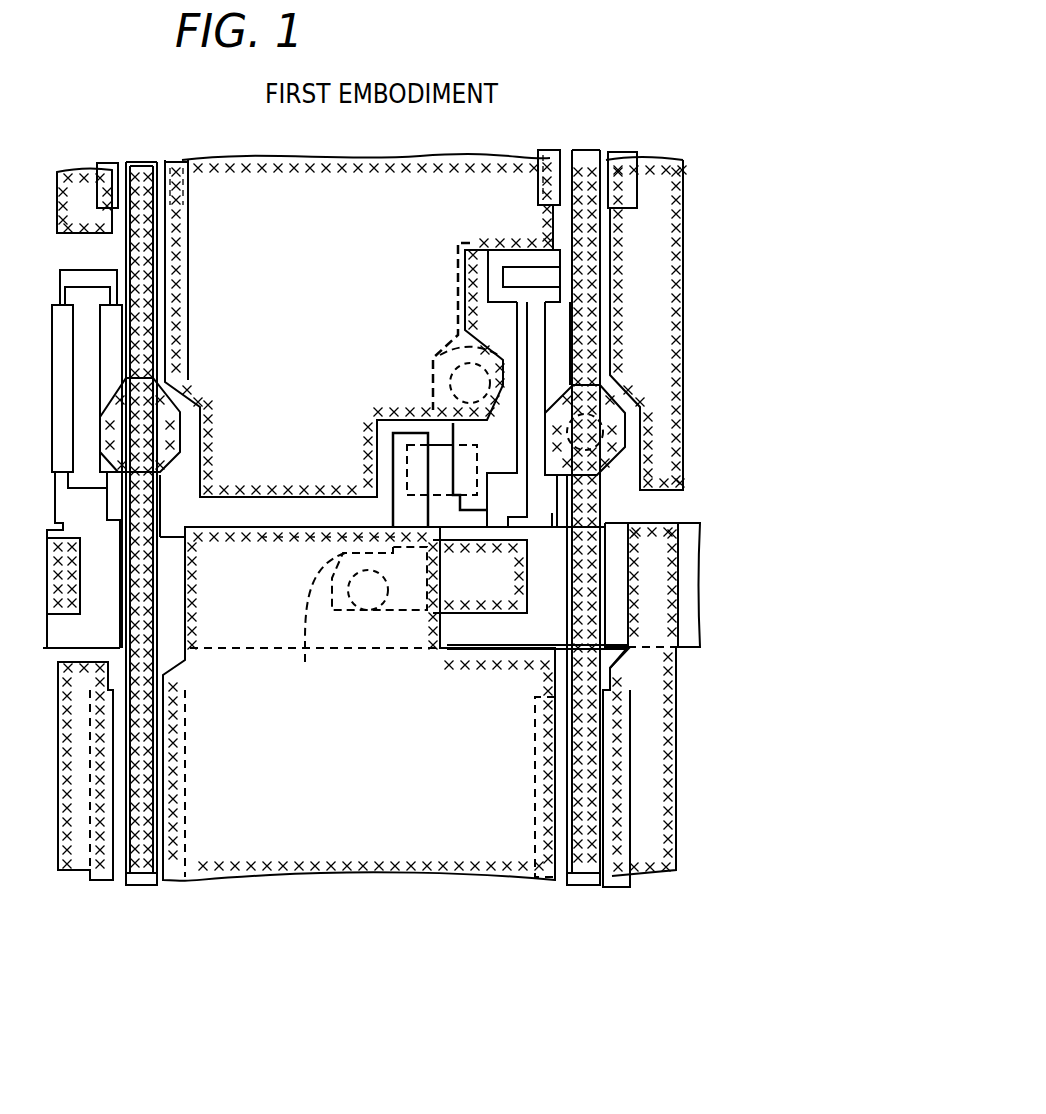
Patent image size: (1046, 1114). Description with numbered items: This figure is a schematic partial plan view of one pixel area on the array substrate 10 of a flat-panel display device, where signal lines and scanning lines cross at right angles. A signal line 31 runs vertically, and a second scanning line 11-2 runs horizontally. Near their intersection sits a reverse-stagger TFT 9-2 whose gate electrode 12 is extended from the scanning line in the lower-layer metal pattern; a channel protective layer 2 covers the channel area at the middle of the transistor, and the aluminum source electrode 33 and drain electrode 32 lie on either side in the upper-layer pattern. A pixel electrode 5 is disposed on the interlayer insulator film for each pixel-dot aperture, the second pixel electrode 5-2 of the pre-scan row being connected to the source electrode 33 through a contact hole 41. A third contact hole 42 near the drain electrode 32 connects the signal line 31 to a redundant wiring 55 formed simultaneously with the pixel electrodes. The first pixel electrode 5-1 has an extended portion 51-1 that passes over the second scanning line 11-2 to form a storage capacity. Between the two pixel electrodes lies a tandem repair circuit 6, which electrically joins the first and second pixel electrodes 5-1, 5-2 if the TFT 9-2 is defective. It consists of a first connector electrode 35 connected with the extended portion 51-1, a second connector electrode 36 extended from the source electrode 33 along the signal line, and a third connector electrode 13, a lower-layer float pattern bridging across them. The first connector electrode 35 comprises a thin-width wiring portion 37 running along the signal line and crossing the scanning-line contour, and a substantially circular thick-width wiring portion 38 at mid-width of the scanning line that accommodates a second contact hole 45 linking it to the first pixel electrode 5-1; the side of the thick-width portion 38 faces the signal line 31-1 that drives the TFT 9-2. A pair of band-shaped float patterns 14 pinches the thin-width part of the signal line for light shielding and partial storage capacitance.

The pixel electrode 5 is at (72, 202).
The second pixel electrode 5-2 is at (233, 185).
The first pixel electrode 5-1 is at (359, 705).
The array substrate 10 is at (548, 132).
The TFT 9-2 is at (642, 334).
The gate electrode 12 is at (540, 275).
The channel protective layer 2 is at (563, 268).
The drain electrode 32 is at (565, 343).
The third contact hole 42 is at (605, 433).
The source electrode 33 is at (500, 355).
The contact hole 41 is at (440, 350).
The extended portion 51-1 is at (225, 548).
The second scanning line 11-2 is at (688, 583).
The second contact hole 45 is at (366, 605).
The thin-width wiring portion 37 is at (405, 500).
The thick-width wiring portion 38 is at (305, 662).
The first connector electrode 35 is at (378, 590).
The third connector electrode 13 is at (448, 630).
The second connector electrode 36 is at (462, 430).
The tandem repair circuit 6 is at (400, 632).
The band-shaped float pattern 14 is at (540, 878).
The signal line 31-1 is at (575, 890).
The signal line 31 is at (137, 887).
The redundant wiring 55 is at (127, 887).